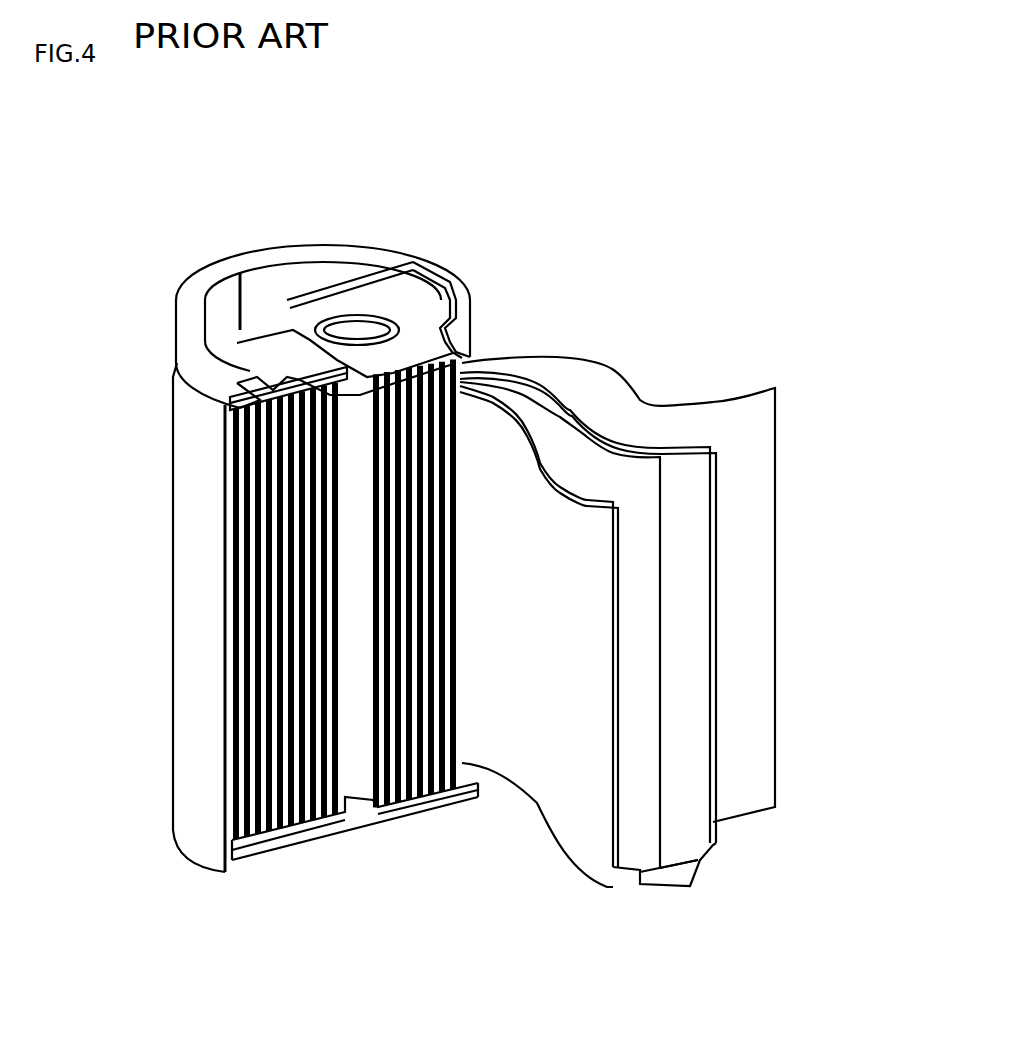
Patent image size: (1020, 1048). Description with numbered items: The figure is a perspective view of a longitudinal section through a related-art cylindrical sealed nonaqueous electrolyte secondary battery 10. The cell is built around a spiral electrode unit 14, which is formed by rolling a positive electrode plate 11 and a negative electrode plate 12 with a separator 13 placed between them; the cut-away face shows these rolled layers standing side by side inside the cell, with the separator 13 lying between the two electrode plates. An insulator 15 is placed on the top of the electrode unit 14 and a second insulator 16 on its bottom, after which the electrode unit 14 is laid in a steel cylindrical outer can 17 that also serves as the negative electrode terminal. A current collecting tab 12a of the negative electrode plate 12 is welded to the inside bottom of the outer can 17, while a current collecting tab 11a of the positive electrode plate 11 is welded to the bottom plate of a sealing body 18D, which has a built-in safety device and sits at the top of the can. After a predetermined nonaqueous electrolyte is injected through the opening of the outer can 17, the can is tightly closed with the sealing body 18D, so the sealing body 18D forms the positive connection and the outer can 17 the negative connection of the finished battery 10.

The nonaqueous electrolyte secondary battery 10 is at (652, 210).
The positive electrode plate 11 is at (603, 540).
The current collecting tab 11a is at (222, 388).
The negative electrode plate 12 is at (690, 715).
The current collecting tab 12a is at (680, 868).
The separator 13 is at (757, 402).
The spiral electrode unit 14 is at (243, 611).
The insulator 15 is at (232, 416).
The insulator 16 is at (237, 817).
The outer can 17 is at (187, 690).
The sealing body 18D is at (309, 270).